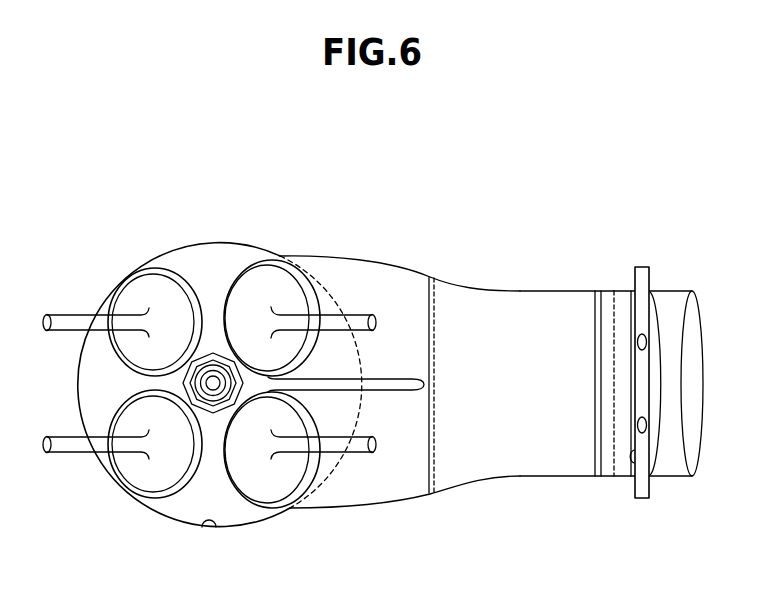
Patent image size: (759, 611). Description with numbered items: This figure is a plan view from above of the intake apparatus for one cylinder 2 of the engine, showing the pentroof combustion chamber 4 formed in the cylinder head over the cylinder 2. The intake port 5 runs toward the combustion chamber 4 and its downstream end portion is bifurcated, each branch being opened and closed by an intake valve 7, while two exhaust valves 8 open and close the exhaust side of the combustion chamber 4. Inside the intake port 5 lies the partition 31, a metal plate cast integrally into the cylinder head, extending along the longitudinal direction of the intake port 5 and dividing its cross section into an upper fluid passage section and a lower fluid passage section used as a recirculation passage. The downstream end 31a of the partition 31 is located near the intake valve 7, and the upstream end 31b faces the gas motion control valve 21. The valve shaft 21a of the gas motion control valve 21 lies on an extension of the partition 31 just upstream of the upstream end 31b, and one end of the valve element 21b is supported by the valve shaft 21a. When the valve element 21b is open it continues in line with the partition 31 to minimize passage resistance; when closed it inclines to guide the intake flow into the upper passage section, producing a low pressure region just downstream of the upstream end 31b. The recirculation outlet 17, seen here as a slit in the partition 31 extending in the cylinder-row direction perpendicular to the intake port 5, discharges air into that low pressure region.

The cylinder 2 is at (220, 419).
The combustion chamber 4 is at (212, 528).
The intake port 5 is at (415, 298).
The intake valve 7 is at (237, 437).
The exhaust valve 8 is at (140, 350).
The recirculation outlet 17 is at (603, 310).
The gas motion control valve 21 is at (670, 348).
The valve shaft 21a is at (659, 383).
The valve element 21b is at (651, 440).
The partition 31 is at (537, 312).
The downstream end of partition 31a is at (429, 478).
The upstream end of partition 31b is at (632, 470).